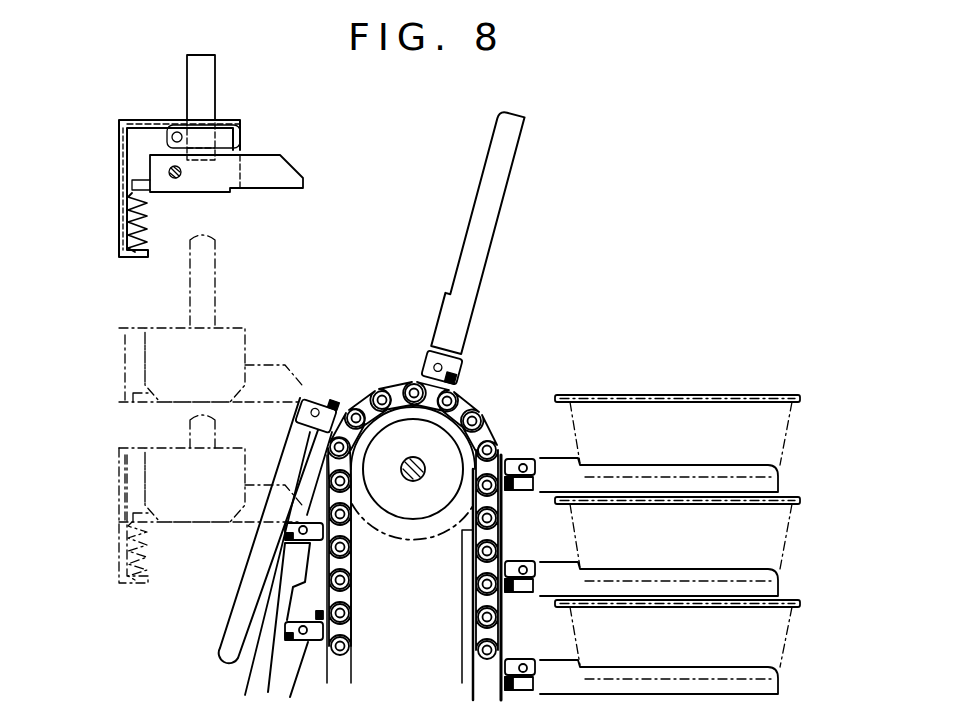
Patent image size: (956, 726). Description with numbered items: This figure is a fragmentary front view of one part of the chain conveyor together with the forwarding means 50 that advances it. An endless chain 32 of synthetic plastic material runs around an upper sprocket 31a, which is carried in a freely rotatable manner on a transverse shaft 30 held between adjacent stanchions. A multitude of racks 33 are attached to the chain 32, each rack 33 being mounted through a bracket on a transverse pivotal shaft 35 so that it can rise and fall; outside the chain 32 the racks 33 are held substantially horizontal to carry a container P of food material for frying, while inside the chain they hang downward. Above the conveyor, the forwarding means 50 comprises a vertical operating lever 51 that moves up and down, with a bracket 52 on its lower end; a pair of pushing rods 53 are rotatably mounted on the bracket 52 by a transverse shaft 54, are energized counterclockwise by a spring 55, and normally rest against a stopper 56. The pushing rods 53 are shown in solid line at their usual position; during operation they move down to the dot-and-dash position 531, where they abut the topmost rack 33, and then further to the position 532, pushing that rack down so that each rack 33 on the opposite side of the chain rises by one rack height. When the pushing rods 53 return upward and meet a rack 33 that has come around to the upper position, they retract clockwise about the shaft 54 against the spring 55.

The transverse shaft 30 is at (421, 458).
The upper sprocket 31a is at (428, 535).
The endless chain 32 is at (396, 393).
The rack 33 is at (490, 226).
The transverse pivotal shaft 35 is at (316, 410).
The forwarding means 50 is at (178, 110).
The operating lever 51 is at (208, 85).
The bracket 52 is at (133, 118).
The pushing rod 53 is at (284, 182).
The pushing rod first dot-and-dash position 531 is at (262, 375).
The pushing rod second dot-and-dash position 532 is at (238, 530).
The transverse shaft 54 is at (169, 172).
The spring 55 is at (130, 222).
The stopper 56 is at (232, 150).
The container P is at (772, 442).